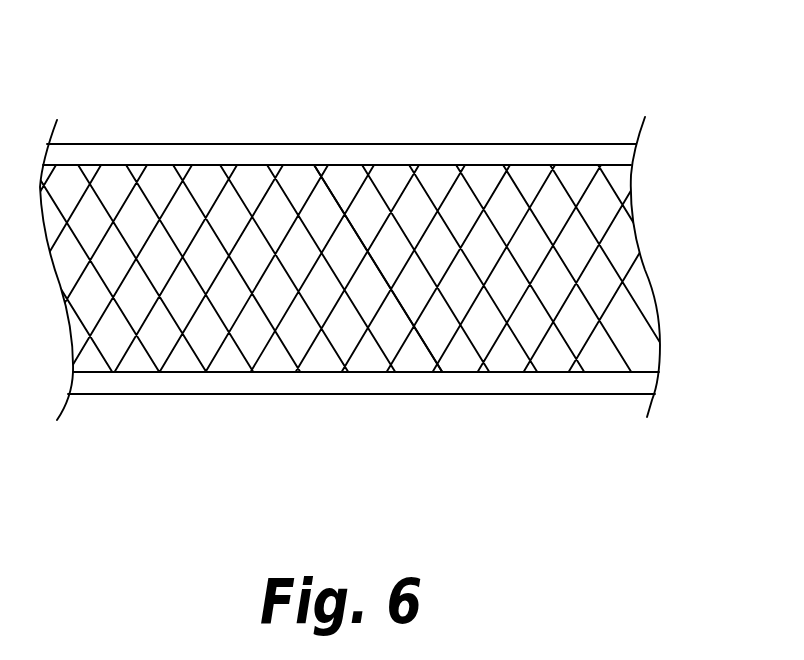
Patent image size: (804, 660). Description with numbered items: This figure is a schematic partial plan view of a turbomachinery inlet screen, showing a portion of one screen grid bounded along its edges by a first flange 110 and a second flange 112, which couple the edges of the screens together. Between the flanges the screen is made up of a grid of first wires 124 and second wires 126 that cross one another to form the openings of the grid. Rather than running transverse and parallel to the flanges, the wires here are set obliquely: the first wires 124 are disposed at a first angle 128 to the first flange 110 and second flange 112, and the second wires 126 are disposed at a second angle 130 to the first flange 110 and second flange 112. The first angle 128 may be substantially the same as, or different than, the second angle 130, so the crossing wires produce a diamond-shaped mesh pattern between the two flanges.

The first flange 110 is at (513, 157).
The second flange 112 is at (542, 385).
The first wires 124 is at (313, 309).
The second wires 126 is at (337, 227).
The first angle 128 is at (207, 170).
The second angle 130 is at (355, 192).